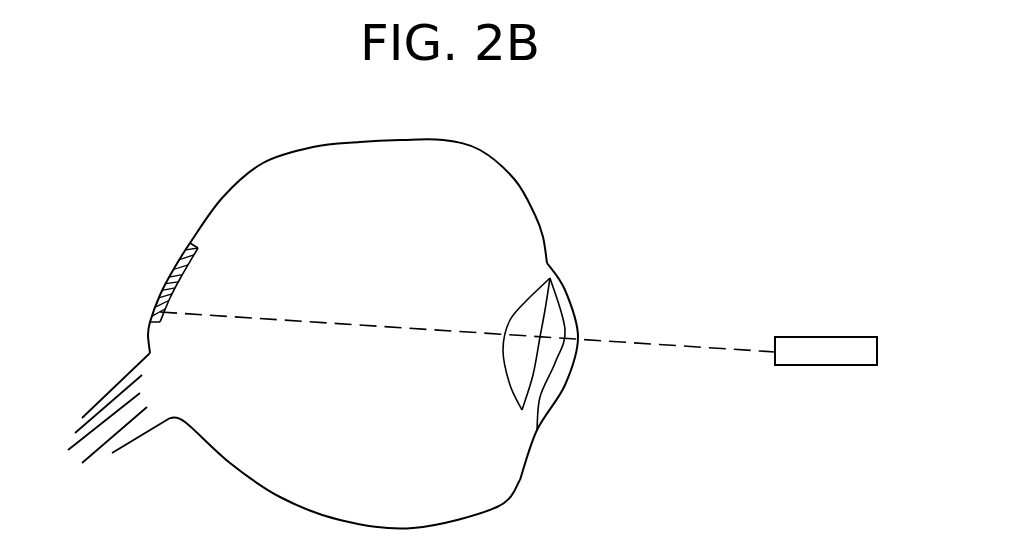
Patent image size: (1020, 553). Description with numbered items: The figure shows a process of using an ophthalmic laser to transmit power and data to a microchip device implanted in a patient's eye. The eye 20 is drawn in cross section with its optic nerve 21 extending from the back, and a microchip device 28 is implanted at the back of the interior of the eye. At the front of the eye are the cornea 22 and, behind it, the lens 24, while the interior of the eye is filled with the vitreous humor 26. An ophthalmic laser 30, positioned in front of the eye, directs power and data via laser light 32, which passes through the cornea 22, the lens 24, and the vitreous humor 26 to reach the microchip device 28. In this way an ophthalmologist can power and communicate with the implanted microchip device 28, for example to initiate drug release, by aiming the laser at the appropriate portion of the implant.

The eye 20 is at (515, 162).
The optic nerve 21 is at (128, 425).
The cornea 22 is at (578, 318).
The lens 24 is at (520, 370).
The vitreous humor 26 is at (360, 229).
The microchip device 28 is at (180, 272).
The ophthalmic laser 30 is at (835, 350).
The laser light 32 is at (655, 345).